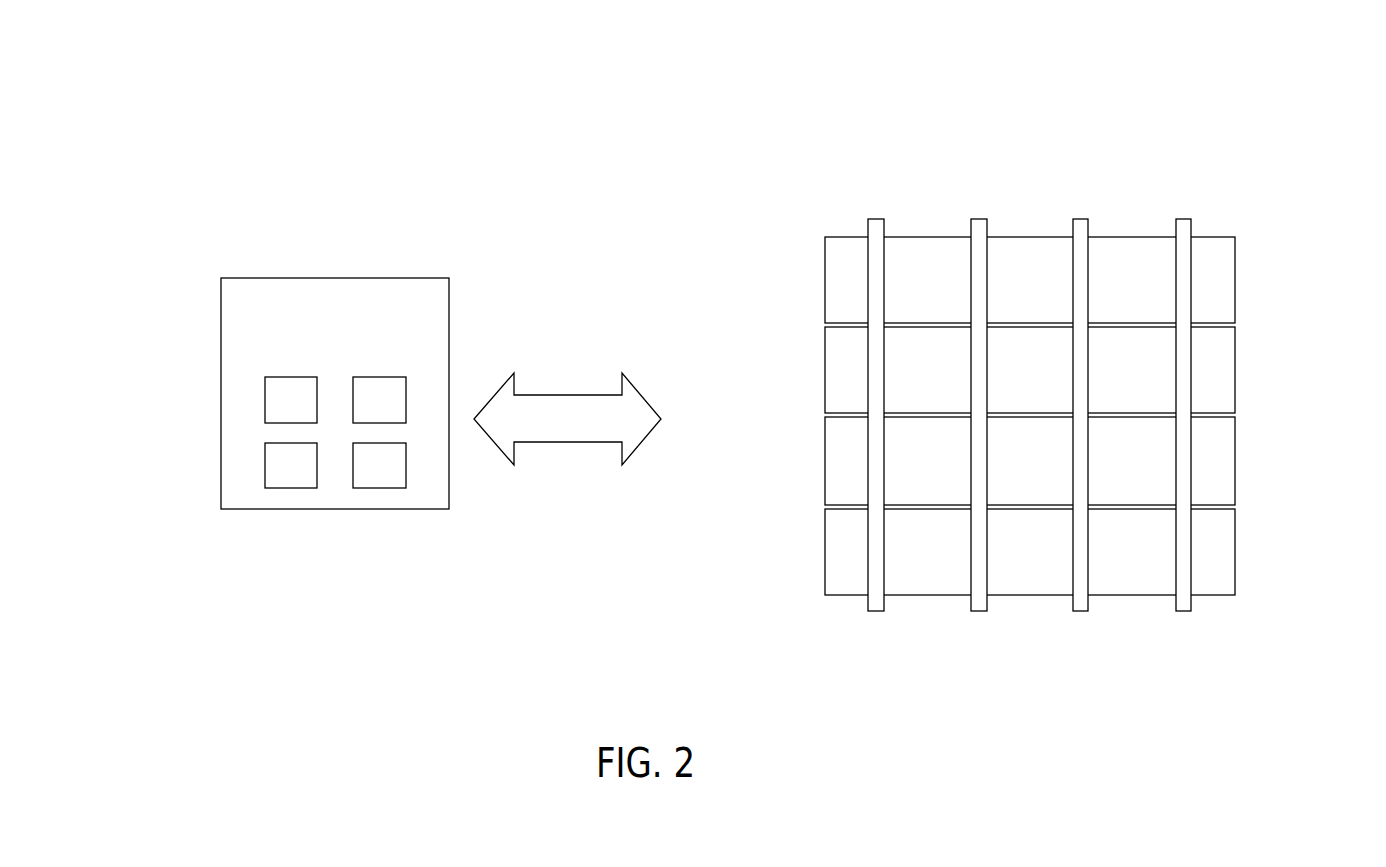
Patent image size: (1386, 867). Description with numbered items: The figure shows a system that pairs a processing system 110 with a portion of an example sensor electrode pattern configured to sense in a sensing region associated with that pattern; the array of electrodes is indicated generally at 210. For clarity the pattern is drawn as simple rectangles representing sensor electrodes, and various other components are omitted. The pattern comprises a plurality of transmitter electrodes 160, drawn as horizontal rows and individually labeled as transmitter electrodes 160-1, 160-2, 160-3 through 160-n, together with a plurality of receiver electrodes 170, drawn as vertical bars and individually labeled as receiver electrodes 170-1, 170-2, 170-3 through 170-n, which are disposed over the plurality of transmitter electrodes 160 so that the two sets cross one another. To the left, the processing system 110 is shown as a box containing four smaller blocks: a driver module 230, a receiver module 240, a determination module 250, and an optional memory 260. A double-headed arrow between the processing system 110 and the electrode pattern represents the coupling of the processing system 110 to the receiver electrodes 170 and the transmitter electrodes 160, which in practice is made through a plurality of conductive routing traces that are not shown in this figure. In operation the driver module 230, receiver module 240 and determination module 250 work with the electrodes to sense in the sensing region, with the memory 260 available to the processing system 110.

The processing system 110 is at (355, 368).
The sensor array 210 is at (1140, 90).
The driver module 230 is at (265, 400).
The receiver module 240 is at (292, 488).
The determination module 250 is at (378, 489).
The memory 260 is at (406, 414).
The transmitter electrodes 160 is at (1029, 415).
The transmitter electrode 160-1 is at (1217, 277).
The transmitter electrode 160-2 is at (1217, 358).
The transmitter electrode 160-3 is at (1217, 452).
The transmitter electrode 160-n is at (1217, 540).
The receiver electrodes 170 is at (1030, 406).
The receiver electrode 170-1 is at (876, 612).
The receiver electrode 170-2 is at (979, 612).
The receiver electrode 170-3 is at (1080, 612).
The receiver electrode 170-n is at (1183, 612).